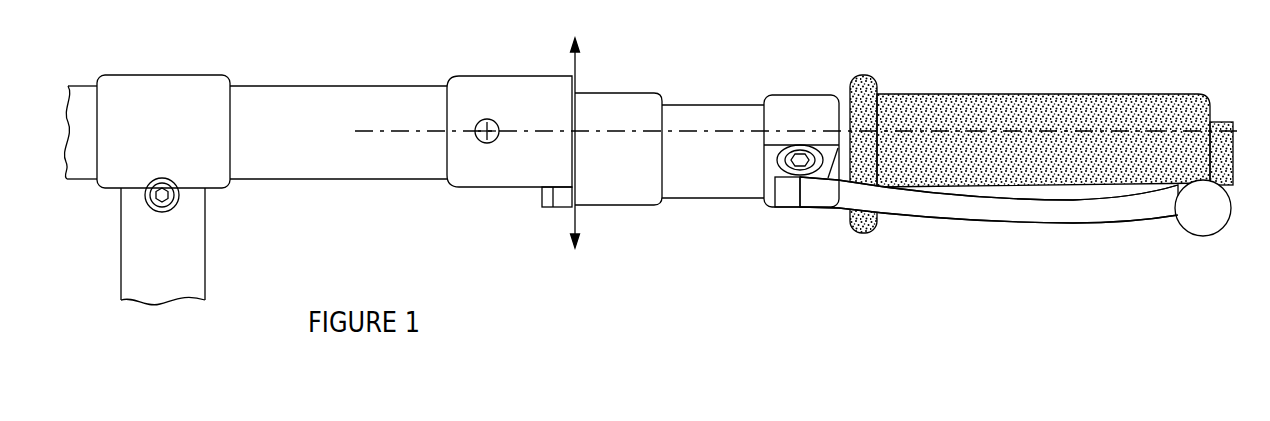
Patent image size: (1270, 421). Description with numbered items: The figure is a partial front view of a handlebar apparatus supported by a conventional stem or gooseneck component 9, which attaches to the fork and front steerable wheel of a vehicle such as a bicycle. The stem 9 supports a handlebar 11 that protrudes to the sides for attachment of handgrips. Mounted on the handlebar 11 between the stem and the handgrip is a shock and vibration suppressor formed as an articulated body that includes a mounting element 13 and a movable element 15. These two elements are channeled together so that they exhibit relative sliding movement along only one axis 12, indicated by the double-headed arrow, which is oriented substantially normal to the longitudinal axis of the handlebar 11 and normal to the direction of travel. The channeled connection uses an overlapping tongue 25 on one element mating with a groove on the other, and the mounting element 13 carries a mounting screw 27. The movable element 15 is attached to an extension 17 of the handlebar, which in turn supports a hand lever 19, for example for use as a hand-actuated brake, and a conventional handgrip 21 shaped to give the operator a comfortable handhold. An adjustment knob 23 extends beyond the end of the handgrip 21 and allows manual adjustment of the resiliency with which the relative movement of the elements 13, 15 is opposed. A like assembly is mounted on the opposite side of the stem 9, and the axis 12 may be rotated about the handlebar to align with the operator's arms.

The stem component 9 is at (162, 77).
The handlebar 11 is at (83, 87).
The axis 12 is at (568, 222).
The mounting element 13 is at (528, 77).
The movable element 15 is at (621, 95).
The extension 17 is at (725, 105).
The hand lever 19 is at (837, 201).
The handgrip 21 is at (906, 95).
The adjustment knob 23 is at (1230, 122).
The overlapping tongue 25 is at (540, 191).
The mounting screw 27 is at (480, 119).